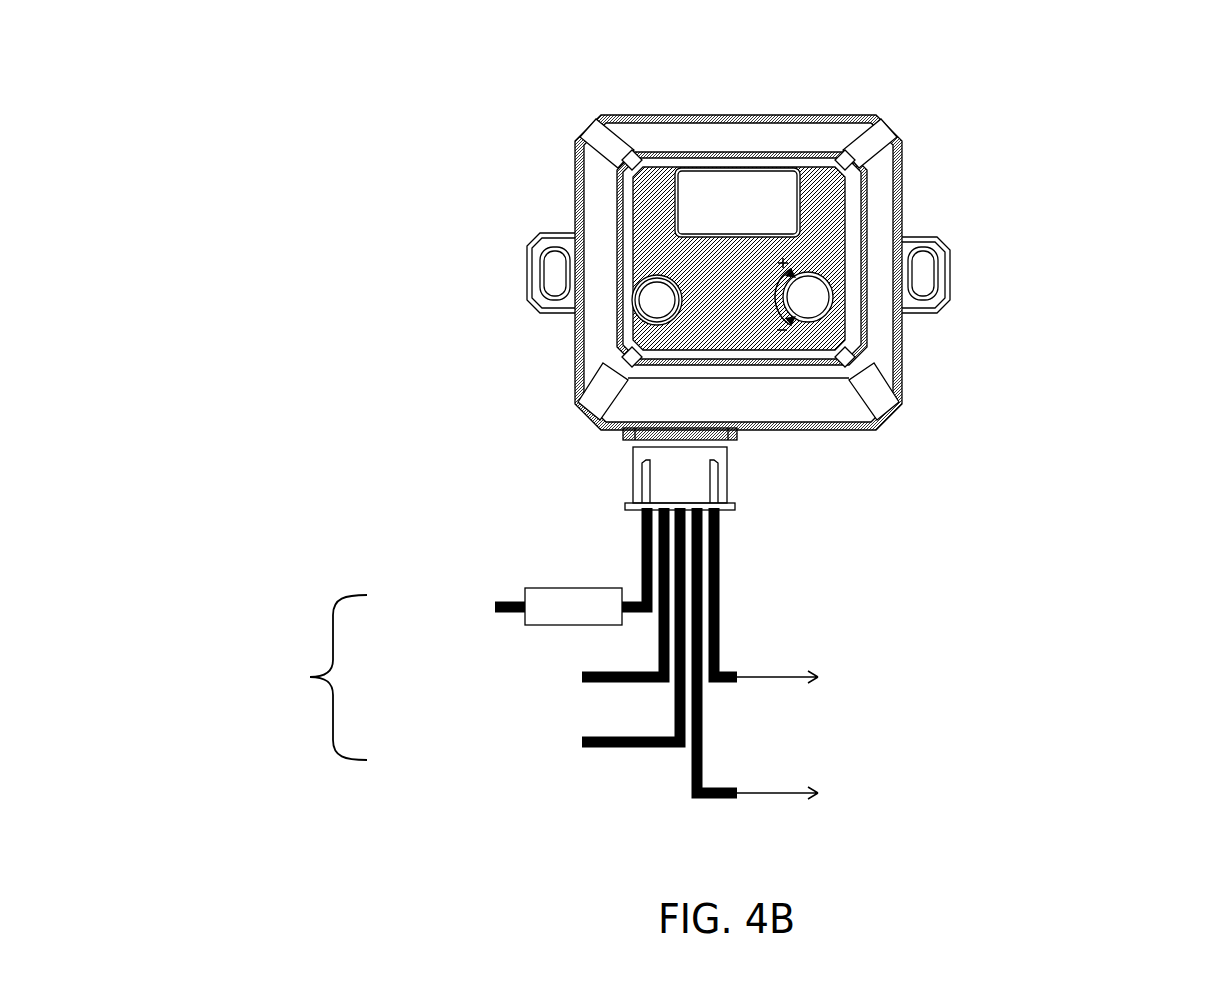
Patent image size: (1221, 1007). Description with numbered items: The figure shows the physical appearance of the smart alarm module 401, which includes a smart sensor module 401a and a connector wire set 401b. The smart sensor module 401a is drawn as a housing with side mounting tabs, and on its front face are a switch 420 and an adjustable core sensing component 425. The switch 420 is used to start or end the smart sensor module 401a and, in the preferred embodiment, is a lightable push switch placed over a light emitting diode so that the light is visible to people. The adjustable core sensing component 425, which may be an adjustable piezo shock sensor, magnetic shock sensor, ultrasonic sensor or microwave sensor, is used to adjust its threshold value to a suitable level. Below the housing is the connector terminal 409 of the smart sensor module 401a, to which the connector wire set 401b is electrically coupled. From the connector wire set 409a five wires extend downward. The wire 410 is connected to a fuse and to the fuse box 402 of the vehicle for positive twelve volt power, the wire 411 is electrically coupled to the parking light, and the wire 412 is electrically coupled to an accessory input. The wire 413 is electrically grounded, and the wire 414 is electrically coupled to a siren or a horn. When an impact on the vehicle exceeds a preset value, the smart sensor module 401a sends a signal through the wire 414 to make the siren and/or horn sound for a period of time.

The smart alarm module 401 is at (400, 109).
The smart sensor module 401a is at (834, 113).
The connector wire set 401b is at (600, 513).
The fuse box 402 is at (240, 677).
The connector terminal 409 is at (730, 438).
The connector wire set 409a is at (693, 480).
The wire 410 is at (495, 603).
The wire 411 is at (582, 677).
The wire 412 is at (582, 742).
The wire 413 is at (715, 795).
The wire 414 is at (730, 603).
The switch 420 is at (660, 300).
The adjustable core sensing component 425 is at (812, 294).